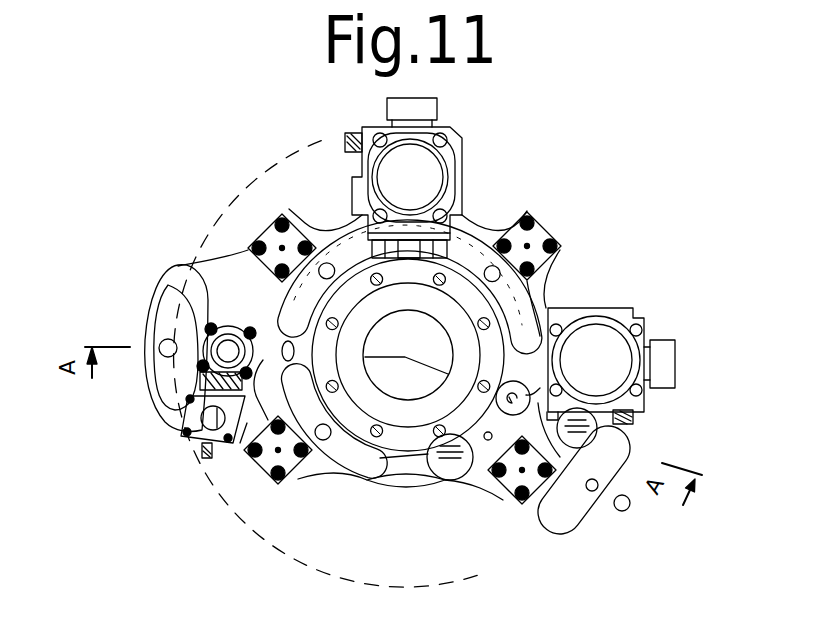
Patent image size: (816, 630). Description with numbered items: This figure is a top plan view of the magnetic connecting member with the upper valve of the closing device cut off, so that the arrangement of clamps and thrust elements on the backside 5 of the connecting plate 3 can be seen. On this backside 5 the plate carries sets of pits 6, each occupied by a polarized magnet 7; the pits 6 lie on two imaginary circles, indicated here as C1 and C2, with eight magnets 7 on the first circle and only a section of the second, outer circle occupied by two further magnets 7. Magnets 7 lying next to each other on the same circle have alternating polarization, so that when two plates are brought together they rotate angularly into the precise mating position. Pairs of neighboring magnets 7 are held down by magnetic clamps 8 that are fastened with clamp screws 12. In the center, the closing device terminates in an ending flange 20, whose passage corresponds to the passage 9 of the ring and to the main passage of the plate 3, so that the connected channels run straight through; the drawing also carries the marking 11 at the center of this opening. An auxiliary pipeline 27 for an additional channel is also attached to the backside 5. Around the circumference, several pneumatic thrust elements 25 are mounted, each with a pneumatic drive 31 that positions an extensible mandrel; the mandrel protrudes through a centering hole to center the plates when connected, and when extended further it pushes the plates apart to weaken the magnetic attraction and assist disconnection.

The connecting plate 3 is at (558, 258).
The backside 5 is at (245, 273).
The pit 6 is at (526, 394).
The magnet 7 is at (452, 480).
The magnetic clamp 8 is at (150, 288).
The passage 9 is at (257, 401).
The bore 11 is at (430, 357).
The clamp screw 12 is at (156, 364).
The ending flange 20 is at (314, 352).
The pneumatic thrust element 25 is at (297, 217).
The auxiliary pipeline 27 is at (228, 325).
The pneumatic drive 31 is at (643, 320).
The circle C1 is at (348, 480).
The circle C2 is at (283, 533).